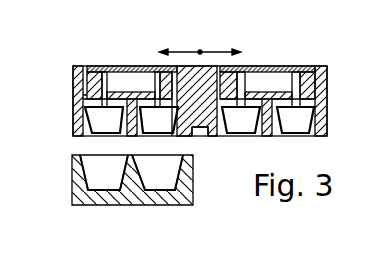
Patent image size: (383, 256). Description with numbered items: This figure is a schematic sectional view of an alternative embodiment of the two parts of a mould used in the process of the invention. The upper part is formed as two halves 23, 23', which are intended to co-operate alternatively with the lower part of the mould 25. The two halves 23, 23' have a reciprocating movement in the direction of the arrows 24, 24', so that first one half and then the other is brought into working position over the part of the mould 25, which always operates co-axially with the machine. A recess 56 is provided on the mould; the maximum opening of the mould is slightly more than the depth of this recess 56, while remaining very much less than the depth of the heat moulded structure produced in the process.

The mould half 23 is at (172, 103).
The mould half 23' is at (346, 101).
The arrow 24 is at (180, 37).
The arrow 24' is at (224, 37).
The recess 56 is at (195, 134).
The part of the mould 25 is at (140, 190).